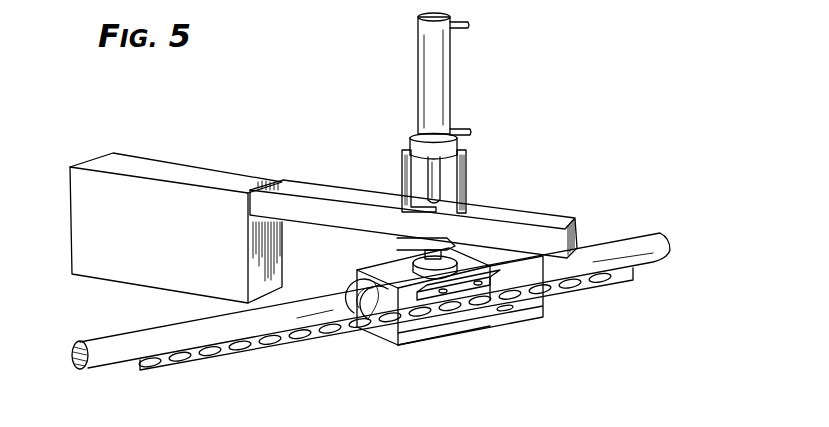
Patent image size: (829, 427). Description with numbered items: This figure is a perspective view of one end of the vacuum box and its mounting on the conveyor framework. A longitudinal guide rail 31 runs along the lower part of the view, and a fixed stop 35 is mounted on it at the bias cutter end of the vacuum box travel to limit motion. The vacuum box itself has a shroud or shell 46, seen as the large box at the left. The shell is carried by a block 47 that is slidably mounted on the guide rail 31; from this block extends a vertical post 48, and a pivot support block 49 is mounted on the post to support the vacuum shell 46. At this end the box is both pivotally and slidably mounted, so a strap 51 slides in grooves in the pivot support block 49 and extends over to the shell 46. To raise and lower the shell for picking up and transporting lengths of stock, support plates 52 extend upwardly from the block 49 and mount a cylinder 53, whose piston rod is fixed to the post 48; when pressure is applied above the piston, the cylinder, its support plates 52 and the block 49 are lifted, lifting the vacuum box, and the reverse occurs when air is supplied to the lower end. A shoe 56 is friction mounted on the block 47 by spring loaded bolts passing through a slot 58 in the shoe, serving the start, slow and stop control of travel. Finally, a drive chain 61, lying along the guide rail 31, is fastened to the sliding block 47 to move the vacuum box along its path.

The guide rail 31 is at (117, 343).
The fixed stop 35 is at (362, 288).
The shroud or shell 46 is at (168, 238).
The block 47 is at (387, 268).
The vertical post 48 is at (427, 254).
The pivot support block 49 is at (423, 203).
The strap 51 is at (547, 233).
The support plate 52 is at (402, 170).
The cylinder 53 is at (428, 46).
The shoe 56 is at (542, 308).
The slot 58 is at (505, 312).
The drive chain 61 is at (146, 368).